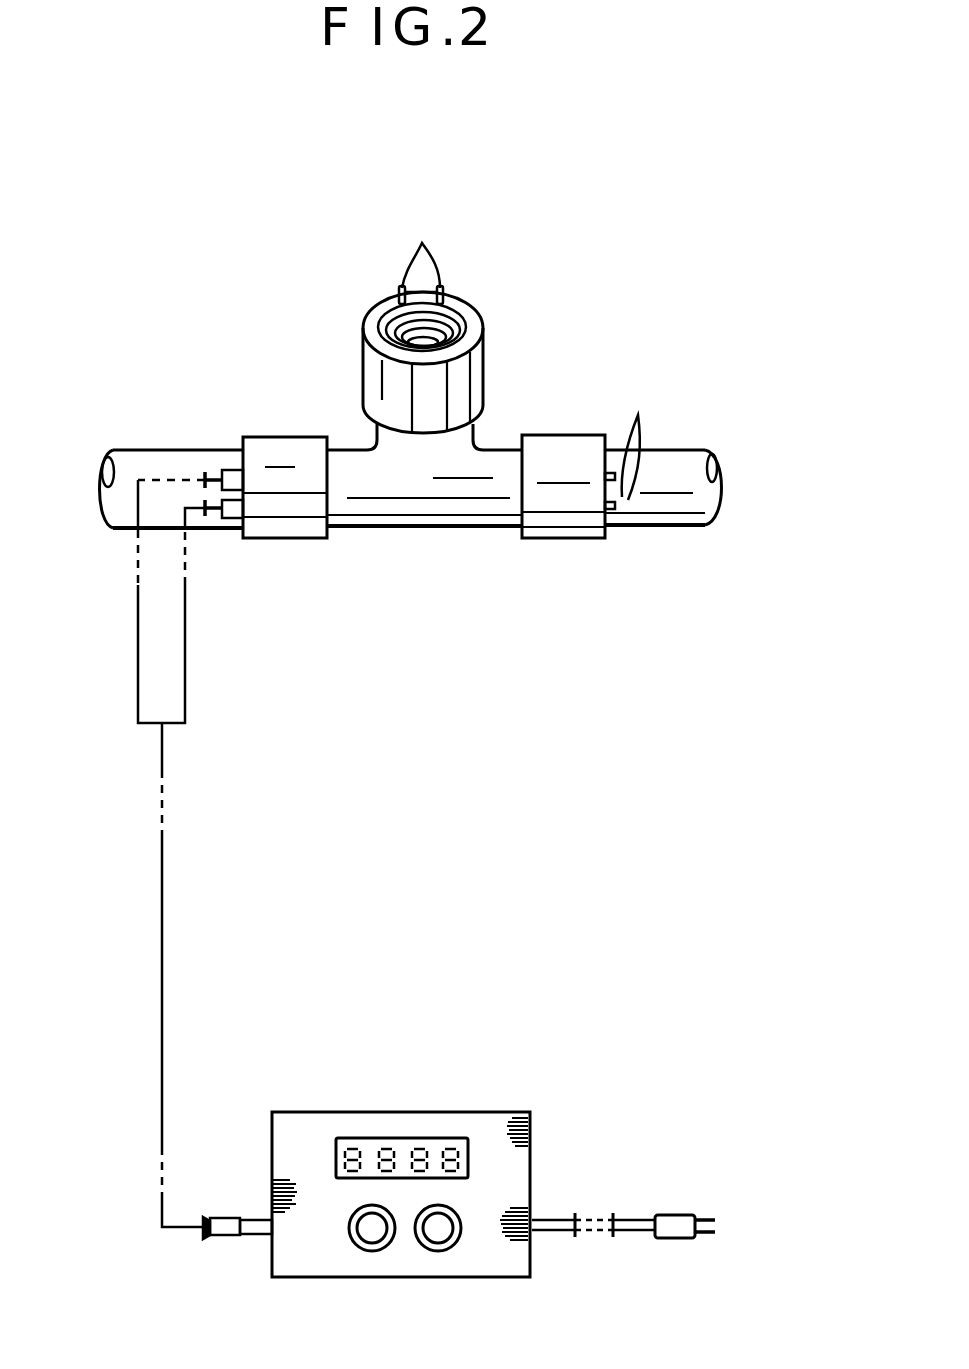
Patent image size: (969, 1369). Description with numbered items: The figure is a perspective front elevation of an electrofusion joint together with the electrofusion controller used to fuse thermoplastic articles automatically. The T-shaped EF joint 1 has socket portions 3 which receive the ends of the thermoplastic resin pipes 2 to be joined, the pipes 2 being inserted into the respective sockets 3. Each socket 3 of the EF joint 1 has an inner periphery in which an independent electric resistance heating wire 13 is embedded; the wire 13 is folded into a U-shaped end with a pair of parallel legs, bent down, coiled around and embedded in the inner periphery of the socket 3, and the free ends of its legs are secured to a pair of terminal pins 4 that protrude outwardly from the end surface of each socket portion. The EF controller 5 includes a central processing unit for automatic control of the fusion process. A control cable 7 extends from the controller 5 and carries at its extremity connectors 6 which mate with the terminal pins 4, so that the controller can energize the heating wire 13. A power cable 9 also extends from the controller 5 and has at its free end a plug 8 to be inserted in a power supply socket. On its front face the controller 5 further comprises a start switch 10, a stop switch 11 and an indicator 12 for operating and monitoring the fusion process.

The EF joint 1 is at (420, 560).
The thermoplastic resin pipe 2 is at (123, 448).
The socket portion 3 is at (484, 356).
The terminal pin 4 is at (524, 355).
The EF controller 5 is at (403, 1092).
The connector 6 is at (229, 469).
The control cable 7 is at (221, 1240).
The plug 8 is at (675, 1215).
The power cable 9 is at (562, 1218).
The start switch 10 is at (368, 1232).
The stop switch 11 is at (436, 1232).
The indicator 12 is at (348, 1138).
The electric resistance heating wire 13 is at (388, 322).